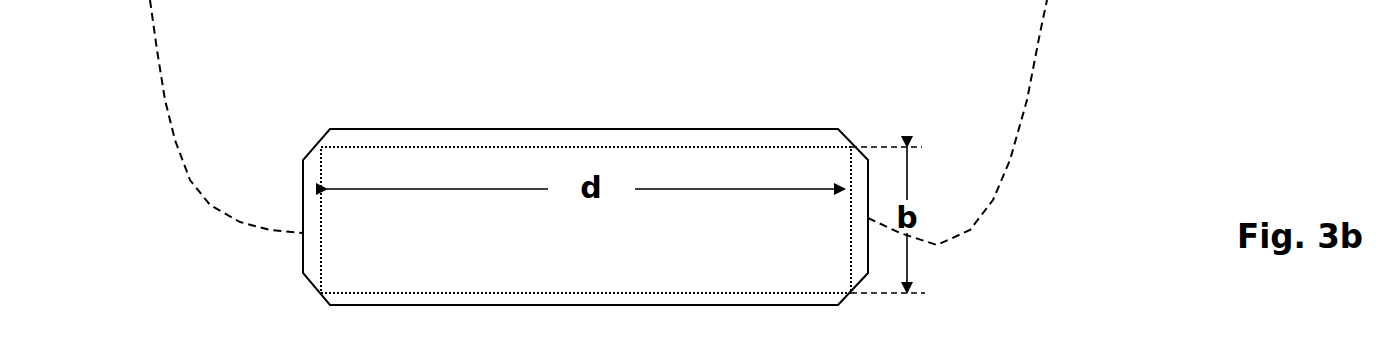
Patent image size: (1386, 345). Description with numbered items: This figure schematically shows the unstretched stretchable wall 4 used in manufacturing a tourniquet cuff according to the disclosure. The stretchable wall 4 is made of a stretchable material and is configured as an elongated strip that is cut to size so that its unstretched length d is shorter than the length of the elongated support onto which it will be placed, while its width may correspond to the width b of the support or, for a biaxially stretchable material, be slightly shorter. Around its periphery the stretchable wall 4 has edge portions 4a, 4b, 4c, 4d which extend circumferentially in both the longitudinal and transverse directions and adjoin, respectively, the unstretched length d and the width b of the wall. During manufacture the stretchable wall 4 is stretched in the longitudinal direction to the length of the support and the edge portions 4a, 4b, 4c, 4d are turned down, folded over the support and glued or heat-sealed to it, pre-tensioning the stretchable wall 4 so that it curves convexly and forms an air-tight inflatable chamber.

The stretchable wall 4 is at (462, 121).
The edge portion 4a is at (310, 242).
The edge portion 4b is at (860, 240).
The edge portion 4c is at (628, 138).
The edge portion 4d is at (550, 300).